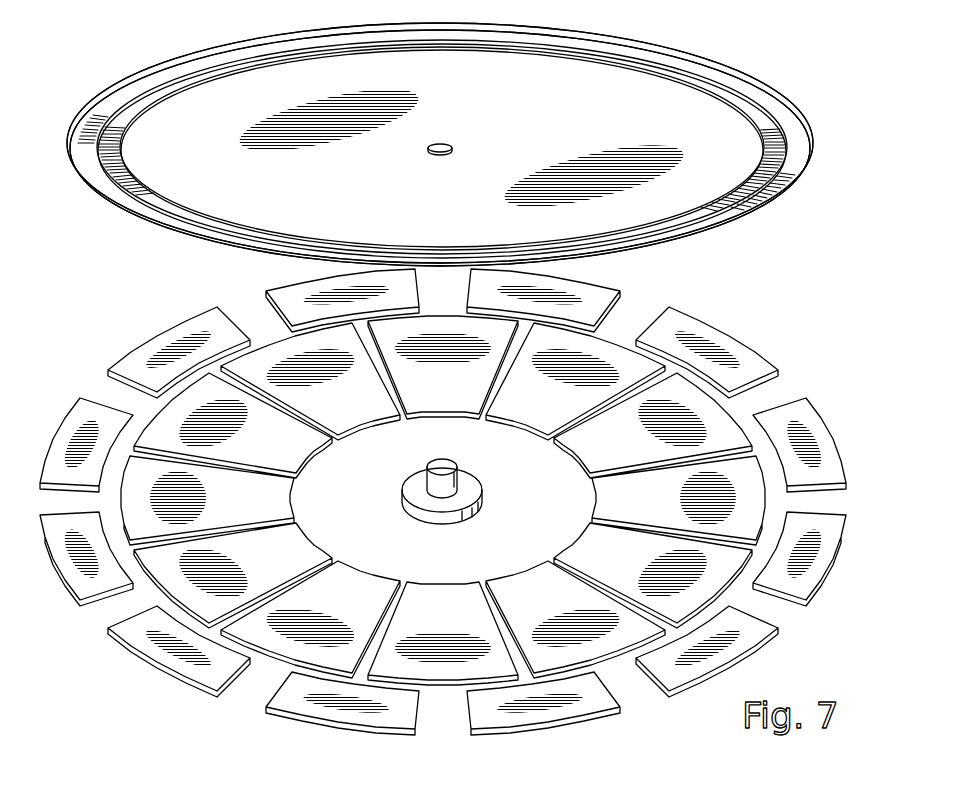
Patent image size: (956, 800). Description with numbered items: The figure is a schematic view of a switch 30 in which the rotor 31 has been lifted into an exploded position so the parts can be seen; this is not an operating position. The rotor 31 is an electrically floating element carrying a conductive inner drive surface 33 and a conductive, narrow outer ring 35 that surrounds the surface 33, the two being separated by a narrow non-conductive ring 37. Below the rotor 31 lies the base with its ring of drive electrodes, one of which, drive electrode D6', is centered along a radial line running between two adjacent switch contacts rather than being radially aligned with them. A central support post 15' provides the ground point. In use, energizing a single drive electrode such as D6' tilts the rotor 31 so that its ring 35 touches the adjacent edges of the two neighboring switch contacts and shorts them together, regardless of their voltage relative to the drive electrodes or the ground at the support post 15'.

The switch 30 is at (750, 59).
The rotor 31 is at (184, 54).
The conductive inner drive surface 33 is at (208, 180).
The conductive narrow outer ring 35 is at (802, 153).
The non-conductive ring 37 is at (762, 119).
The support post 15' is at (463, 481).
The drive electrode D6' is at (443, 522).